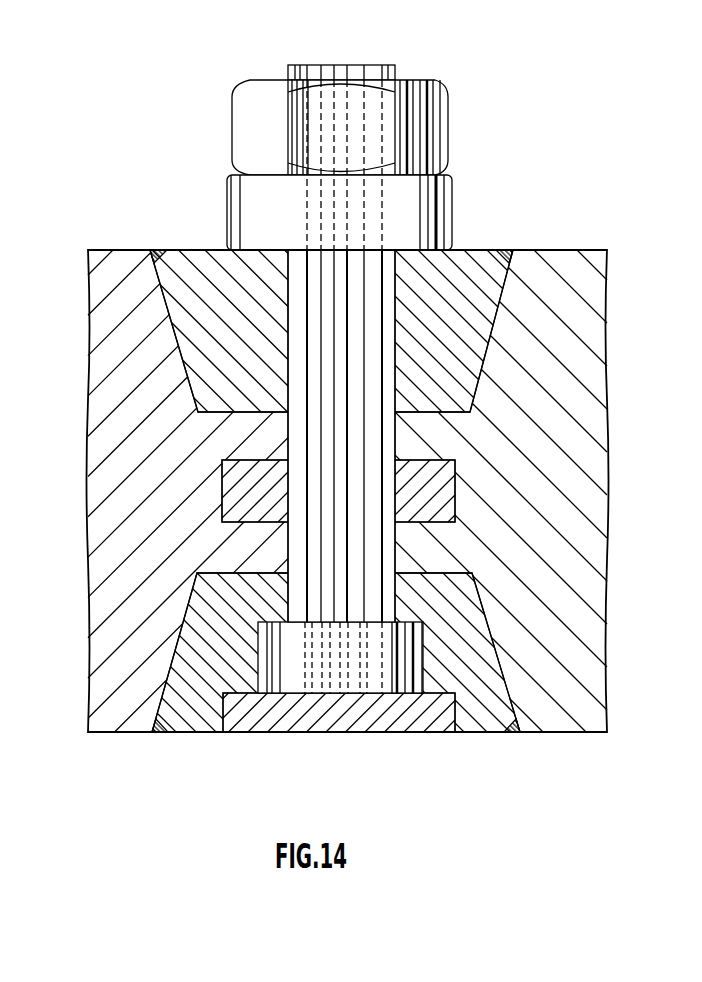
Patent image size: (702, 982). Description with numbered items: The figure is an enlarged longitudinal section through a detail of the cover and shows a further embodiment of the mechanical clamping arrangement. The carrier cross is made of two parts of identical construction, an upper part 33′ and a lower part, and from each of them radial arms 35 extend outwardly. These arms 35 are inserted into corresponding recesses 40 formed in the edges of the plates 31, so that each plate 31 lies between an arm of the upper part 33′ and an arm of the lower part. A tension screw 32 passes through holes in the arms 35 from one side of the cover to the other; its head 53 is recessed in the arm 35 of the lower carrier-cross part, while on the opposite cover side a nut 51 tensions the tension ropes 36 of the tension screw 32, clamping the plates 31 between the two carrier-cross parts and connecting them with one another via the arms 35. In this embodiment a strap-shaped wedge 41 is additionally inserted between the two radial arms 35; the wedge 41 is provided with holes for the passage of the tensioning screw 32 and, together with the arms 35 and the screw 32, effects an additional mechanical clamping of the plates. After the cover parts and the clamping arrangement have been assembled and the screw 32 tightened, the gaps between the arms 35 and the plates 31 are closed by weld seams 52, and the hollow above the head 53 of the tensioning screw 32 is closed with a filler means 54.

The plate 31 is at (122, 270).
The tension screw 32 is at (278, 73).
The upper part of carrier cross 33′ is at (476, 243).
The radial arm 35 is at (202, 265).
The tension ropes 36 is at (362, 65).
The recess 40 is at (487, 287).
The strap-shaped wedge 41 is at (233, 502).
The nut 51 is at (440, 128).
The weld seam 52 is at (158, 258).
The head of tensioning screw 53 is at (393, 682).
The filler means 54 is at (323, 723).